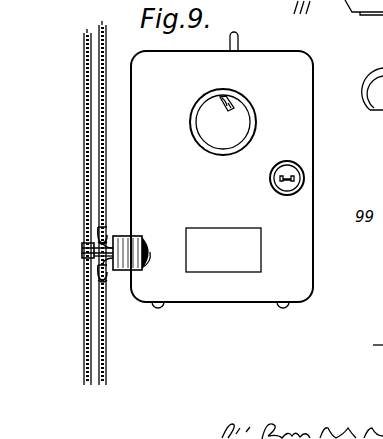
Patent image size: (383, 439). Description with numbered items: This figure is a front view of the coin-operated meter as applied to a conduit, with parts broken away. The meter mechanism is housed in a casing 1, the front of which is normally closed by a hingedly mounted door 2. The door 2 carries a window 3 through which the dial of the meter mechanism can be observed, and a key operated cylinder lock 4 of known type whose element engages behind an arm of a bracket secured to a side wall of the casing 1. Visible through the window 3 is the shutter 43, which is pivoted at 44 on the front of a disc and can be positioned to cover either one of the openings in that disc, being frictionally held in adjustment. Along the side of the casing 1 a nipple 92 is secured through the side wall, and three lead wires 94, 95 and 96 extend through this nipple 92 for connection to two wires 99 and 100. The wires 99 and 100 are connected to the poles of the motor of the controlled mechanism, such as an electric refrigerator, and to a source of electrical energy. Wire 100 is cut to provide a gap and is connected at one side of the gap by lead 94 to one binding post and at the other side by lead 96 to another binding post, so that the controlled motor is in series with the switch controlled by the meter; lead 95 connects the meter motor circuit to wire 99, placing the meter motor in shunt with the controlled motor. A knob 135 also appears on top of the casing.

The casing 1 is at (321, 120).
The door 2 is at (233, 298).
The window 3 is at (240, 124).
The key operated cylinder lock 4 is at (304, 175).
The shutter 43 is at (237, 108).
The pivot 44 is at (221, 109).
The nipple 92 is at (143, 246).
The lead wire 94 is at (110, 242).
The lead wire 95 is at (92, 250).
The lead wire 96 is at (98, 259).
The wire 99 is at (88, 388).
The wire 100 is at (104, 388).
The knob 135 is at (238, 44).